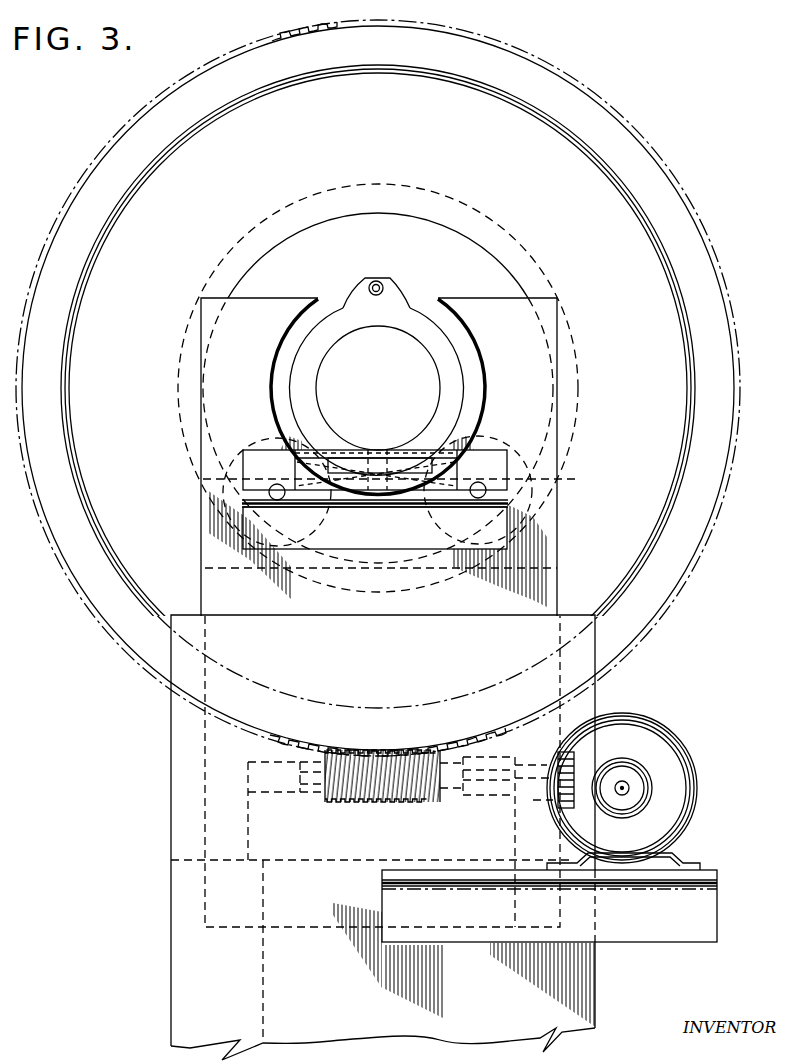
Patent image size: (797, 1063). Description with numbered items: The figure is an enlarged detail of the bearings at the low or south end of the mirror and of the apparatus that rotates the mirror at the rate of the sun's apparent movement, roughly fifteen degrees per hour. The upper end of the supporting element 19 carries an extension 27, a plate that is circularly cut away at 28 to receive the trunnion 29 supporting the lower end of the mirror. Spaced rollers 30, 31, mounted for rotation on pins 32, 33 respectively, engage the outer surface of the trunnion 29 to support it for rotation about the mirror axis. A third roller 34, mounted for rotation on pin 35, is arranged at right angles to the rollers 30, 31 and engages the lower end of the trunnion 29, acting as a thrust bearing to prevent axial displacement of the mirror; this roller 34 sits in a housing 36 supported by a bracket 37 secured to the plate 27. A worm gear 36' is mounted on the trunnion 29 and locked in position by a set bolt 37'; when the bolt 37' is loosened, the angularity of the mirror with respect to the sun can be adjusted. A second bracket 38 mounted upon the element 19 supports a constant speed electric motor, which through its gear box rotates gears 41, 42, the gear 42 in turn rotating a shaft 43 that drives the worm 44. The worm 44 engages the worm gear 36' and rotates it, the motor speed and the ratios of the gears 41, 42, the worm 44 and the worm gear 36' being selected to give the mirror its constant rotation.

The element 19 is at (573, 977).
The extension 27 is at (558, 523).
The circular cut-away 28 is at (480, 362).
The trunnion 29 is at (450, 343).
The roller 30 is at (499, 439).
The roller 31 is at (259, 437).
The pin 32 is at (487, 483).
The pin 33 is at (280, 498).
The third roller 34 is at (348, 467).
The pin 35 is at (398, 470).
The housing 36 is at (375, 470).
The worm gear 36' is at (369, 382).
The bracket 37 is at (375, 524).
The set bolt 37' is at (389, 278).
The second bracket 38 is at (705, 912).
The gear 41 is at (572, 808).
The gear 42 is at (567, 753).
The shaft 43 is at (526, 764).
The worm 44 is at (403, 800).